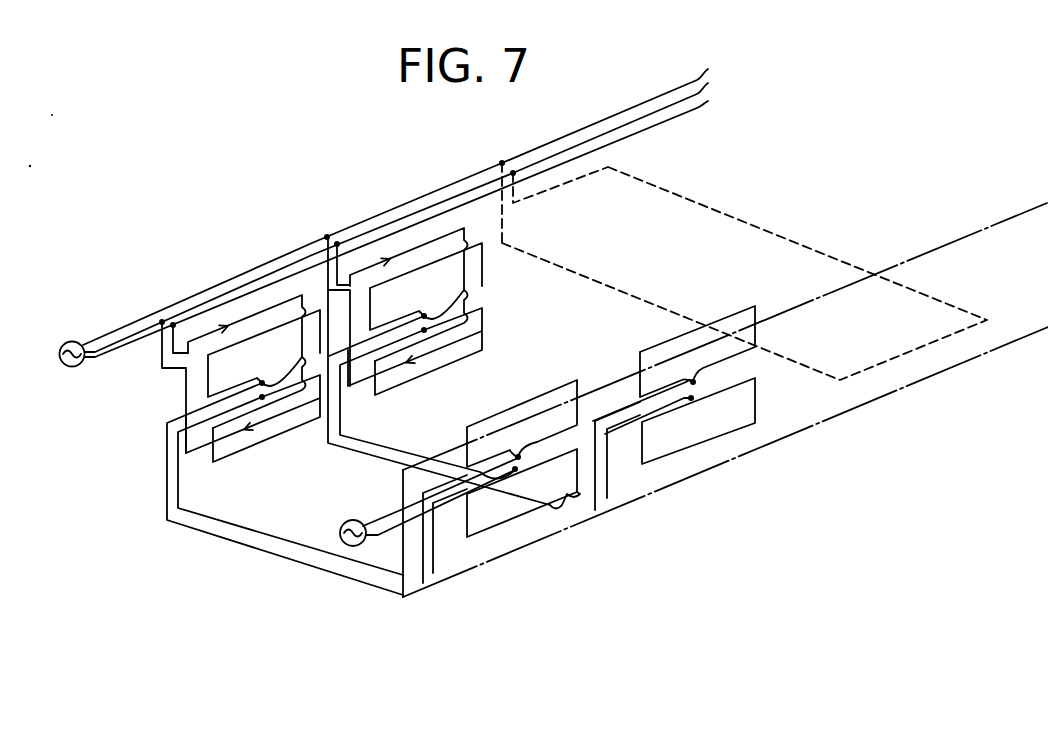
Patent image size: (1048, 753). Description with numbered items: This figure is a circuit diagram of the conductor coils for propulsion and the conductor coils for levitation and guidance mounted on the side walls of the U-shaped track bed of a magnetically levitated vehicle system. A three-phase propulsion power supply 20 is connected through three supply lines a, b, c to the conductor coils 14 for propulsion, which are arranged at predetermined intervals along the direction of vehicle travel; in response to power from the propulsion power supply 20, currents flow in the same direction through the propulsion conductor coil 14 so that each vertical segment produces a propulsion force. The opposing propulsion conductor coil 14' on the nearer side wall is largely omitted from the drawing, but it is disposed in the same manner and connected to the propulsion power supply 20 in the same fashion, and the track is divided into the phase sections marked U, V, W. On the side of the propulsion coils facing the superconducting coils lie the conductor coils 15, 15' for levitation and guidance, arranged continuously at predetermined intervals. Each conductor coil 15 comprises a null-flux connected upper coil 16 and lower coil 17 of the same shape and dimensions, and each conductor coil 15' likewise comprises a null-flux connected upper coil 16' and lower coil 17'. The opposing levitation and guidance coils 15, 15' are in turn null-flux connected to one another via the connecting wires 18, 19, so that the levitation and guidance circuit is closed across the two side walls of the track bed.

The conductor coil for propulsion 14 is at (342, 314).
The conductor coil for levitation and guidance 15 is at (344, 352).
The upper coil 16 is at (376, 321).
The lower coil 17 is at (368, 388).
The connecting wire 18 is at (243, 543).
The connecting wire 19 is at (247, 527).
The three-phase propulsion power supply 20 is at (74, 342).
The conductor coil for propulsion 14' is at (575, 537).
The conductor coil for levitation and guidance 15' is at (614, 354).
The upper coil 16' is at (594, 363).
The lower coil 17' is at (630, 472).
The power line a is at (404, 211).
The power line b is at (405, 224).
The power line c is at (403, 198).
The phase U section U is at (520, 593).
The phase V section V is at (701, 515).
The phase W section W is at (897, 425).